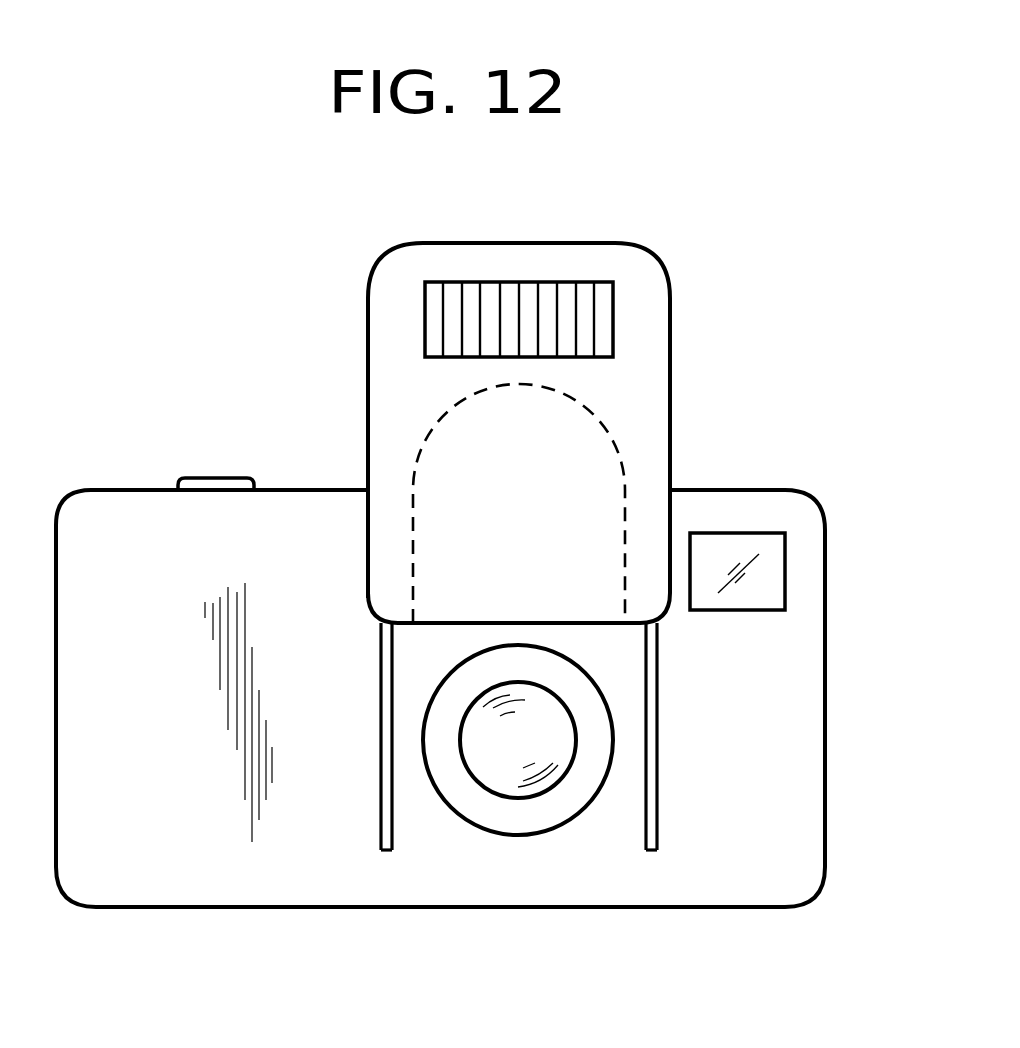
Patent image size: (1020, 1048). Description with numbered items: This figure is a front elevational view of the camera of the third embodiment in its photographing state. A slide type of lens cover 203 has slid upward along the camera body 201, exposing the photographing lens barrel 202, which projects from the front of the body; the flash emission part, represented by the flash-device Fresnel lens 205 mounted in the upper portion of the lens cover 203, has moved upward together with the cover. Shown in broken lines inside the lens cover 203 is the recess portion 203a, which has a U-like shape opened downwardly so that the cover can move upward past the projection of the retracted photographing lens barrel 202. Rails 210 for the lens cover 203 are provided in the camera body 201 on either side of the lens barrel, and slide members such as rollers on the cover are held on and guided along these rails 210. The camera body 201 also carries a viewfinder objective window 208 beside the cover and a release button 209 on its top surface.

The camera body 201 is at (175, 877).
The photographing lens barrel 202 is at (519, 820).
The lens cover 203 is at (635, 405).
The recess portion 203a is at (413, 485).
The flash-device Fresnel lens 205 is at (605, 310).
The viewfinder objective window 208 is at (772, 577).
The release button 209 is at (192, 480).
The rails 210 is at (378, 877).